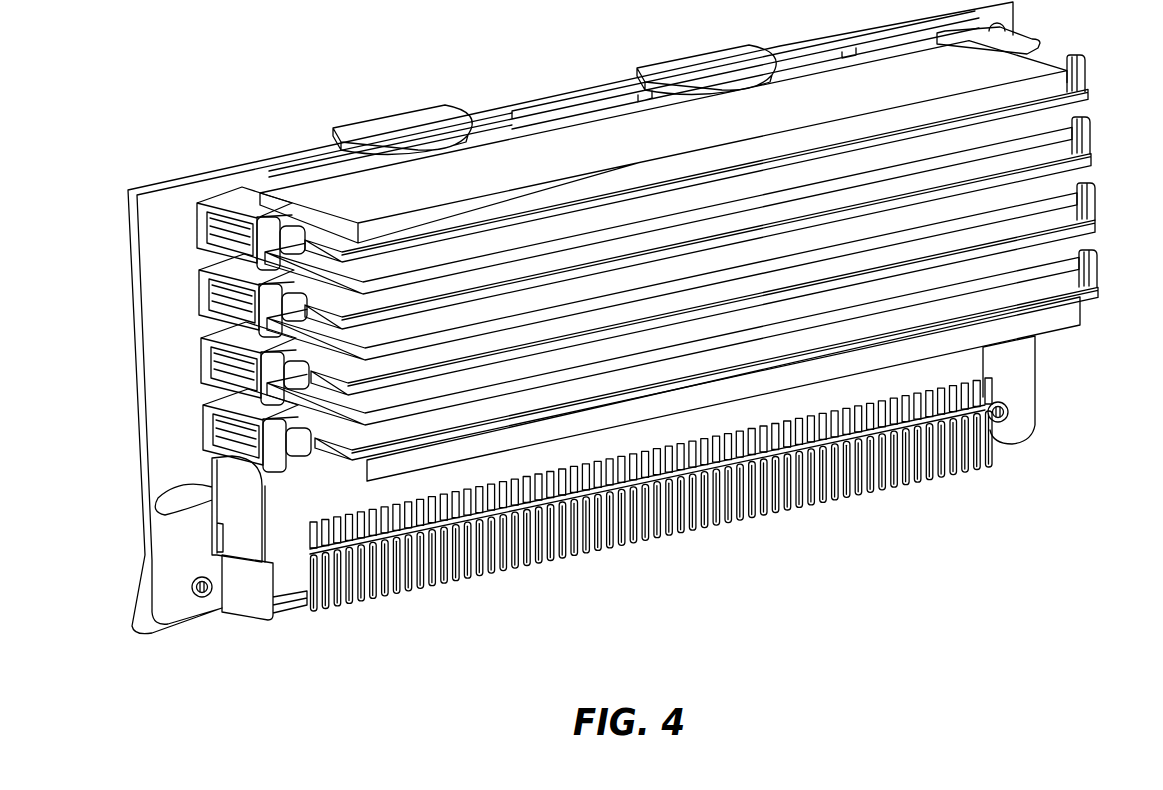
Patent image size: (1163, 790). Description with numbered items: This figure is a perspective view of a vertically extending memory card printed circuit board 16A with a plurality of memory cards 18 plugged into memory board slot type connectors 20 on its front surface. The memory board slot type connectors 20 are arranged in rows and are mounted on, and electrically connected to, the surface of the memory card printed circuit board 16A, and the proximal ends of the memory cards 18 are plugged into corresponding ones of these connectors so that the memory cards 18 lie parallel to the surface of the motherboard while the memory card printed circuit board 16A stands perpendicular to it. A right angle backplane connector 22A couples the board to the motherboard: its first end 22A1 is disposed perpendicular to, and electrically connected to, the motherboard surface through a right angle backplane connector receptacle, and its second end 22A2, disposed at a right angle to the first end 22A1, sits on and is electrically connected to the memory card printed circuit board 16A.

The memory card printed circuit board 16A is at (163, 207).
The memory card 18 is at (1087, 70).
The memory board slot type connector 20 is at (243, 207).
The right angle backplane connector 22A is at (572, 485).
The first end 22A1 is at (241, 543).
The second end 22A2 is at (228, 485).